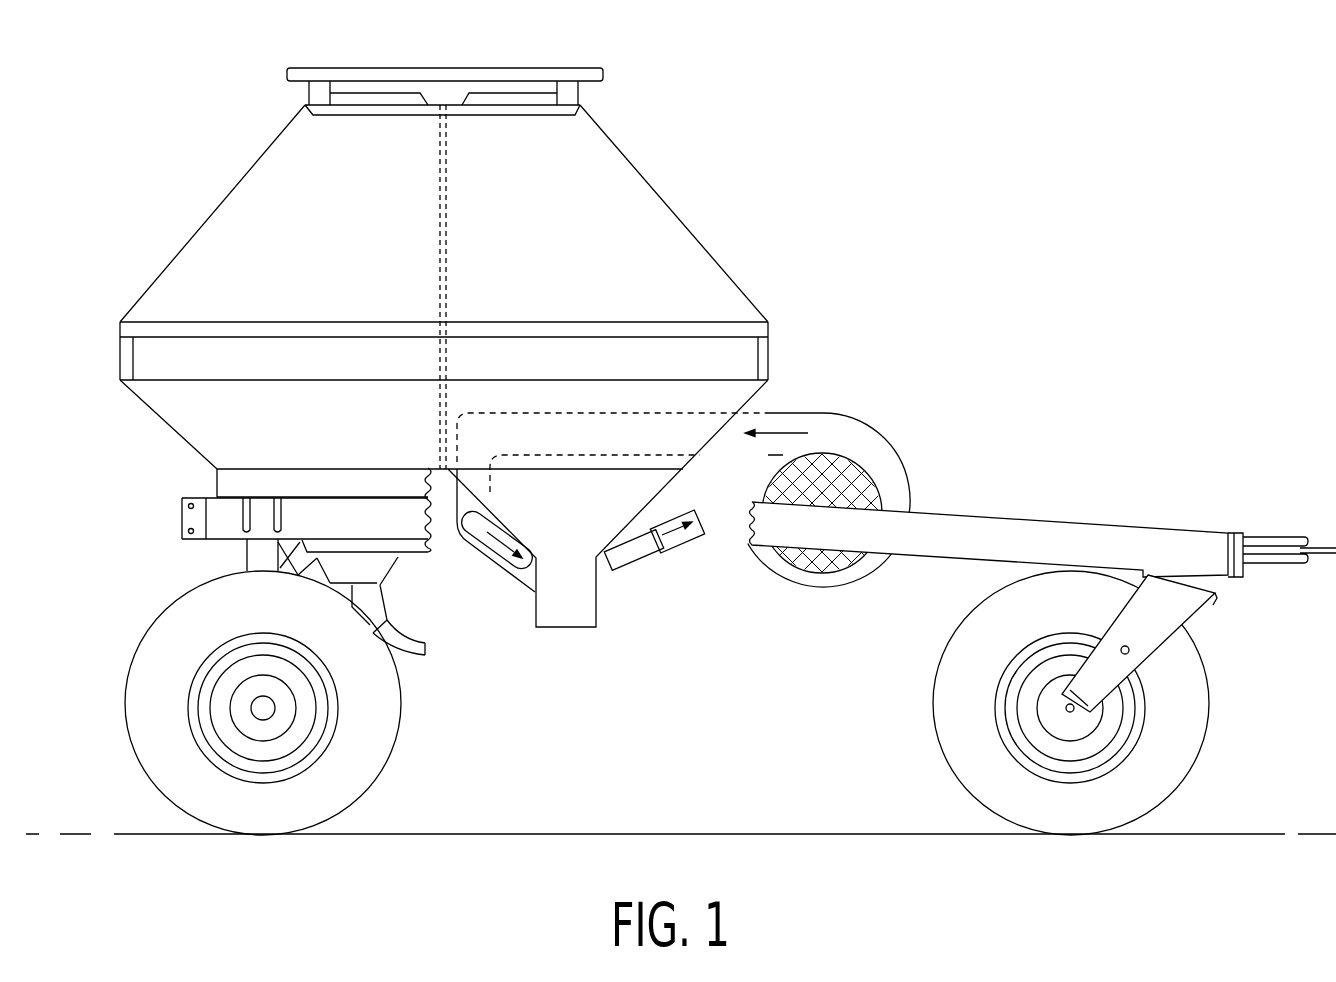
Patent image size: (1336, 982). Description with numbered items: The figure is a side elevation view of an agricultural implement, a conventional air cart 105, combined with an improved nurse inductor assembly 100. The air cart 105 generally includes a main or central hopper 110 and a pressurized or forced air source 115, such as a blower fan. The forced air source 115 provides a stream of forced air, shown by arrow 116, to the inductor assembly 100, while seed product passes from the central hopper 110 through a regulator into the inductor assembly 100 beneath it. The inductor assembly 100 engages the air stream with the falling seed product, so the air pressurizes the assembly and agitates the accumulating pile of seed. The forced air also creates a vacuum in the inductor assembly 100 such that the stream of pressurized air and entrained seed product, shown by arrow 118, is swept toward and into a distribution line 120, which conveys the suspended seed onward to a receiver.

The nurse inductor assembly 100 is at (681, 451).
The air cart 105 is at (487, 347).
The central hopper 110 is at (624, 220).
The forced air source 115 is at (903, 420).
The arrow 116 is at (782, 433).
The arrow 118 is at (662, 503).
The distribution line 120 is at (667, 537).